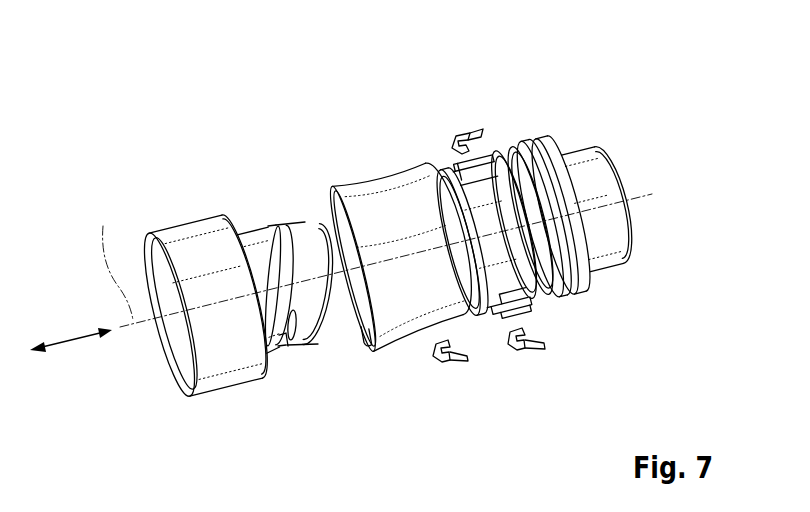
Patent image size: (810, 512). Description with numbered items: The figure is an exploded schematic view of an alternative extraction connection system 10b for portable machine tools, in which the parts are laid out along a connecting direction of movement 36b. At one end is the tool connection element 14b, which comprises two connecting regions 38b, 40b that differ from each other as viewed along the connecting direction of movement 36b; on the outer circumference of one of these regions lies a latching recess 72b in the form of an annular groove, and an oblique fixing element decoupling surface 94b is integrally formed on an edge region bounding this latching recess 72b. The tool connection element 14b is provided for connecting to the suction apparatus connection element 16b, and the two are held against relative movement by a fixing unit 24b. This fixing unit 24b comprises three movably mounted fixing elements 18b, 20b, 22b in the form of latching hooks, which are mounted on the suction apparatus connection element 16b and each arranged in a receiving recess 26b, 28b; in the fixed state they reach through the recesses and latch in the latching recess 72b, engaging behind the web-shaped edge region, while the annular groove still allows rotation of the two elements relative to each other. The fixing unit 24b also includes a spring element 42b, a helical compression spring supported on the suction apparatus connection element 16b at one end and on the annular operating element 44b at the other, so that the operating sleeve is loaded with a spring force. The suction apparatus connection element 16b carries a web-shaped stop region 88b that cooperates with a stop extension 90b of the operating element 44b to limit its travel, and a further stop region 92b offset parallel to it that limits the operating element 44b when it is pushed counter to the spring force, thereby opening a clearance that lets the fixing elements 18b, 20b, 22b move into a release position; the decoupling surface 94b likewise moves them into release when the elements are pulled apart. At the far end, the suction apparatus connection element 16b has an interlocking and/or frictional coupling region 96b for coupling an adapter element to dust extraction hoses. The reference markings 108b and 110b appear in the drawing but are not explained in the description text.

The extraction connection system 10b is at (688, 82).
The tool connection element 14b is at (290, 246).
The suction apparatus connection element 16b is at (582, 173).
The fixing element 18b is at (467, 131).
The fixing element 20b is at (537, 351).
The fixing element 22b is at (455, 364).
The fixing unit 24b is at (634, 384).
The receiving recess 26b is at (493, 150).
The receiving recess 28b is at (497, 312).
The connecting direction of movement 36b is at (78, 334).
The connecting region 38b is at (307, 224).
The connecting region 40b is at (166, 345).
The spring element 42b is at (556, 297).
The operating element 44b is at (376, 200).
The latching recess 72b is at (283, 336).
The stop region 88b is at (437, 165).
The stop extension 90b is at (358, 338).
The further stop region 92b is at (554, 121).
The fixing element decoupling surface 94b is at (300, 346).
The coupling region 96b is at (624, 154).
The section plane 108b is at (109, 261).
The axis 110b is at (648, 197).